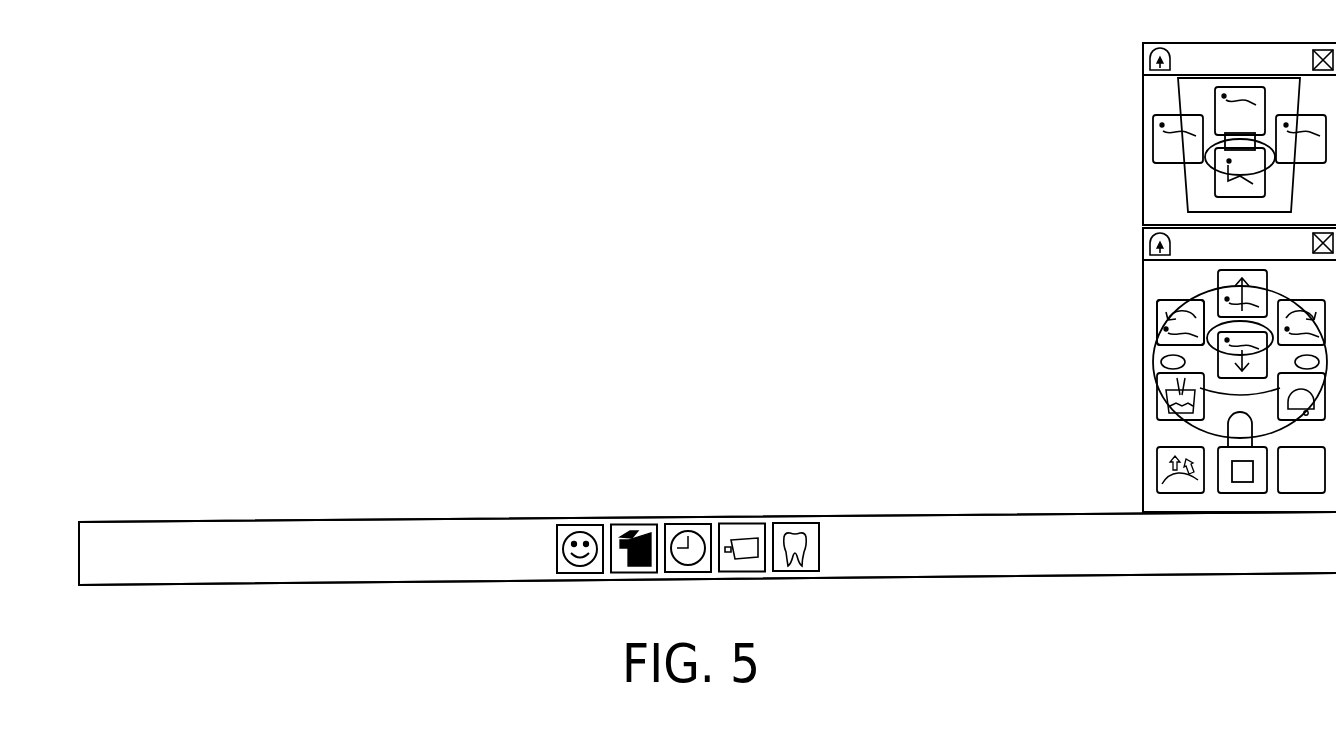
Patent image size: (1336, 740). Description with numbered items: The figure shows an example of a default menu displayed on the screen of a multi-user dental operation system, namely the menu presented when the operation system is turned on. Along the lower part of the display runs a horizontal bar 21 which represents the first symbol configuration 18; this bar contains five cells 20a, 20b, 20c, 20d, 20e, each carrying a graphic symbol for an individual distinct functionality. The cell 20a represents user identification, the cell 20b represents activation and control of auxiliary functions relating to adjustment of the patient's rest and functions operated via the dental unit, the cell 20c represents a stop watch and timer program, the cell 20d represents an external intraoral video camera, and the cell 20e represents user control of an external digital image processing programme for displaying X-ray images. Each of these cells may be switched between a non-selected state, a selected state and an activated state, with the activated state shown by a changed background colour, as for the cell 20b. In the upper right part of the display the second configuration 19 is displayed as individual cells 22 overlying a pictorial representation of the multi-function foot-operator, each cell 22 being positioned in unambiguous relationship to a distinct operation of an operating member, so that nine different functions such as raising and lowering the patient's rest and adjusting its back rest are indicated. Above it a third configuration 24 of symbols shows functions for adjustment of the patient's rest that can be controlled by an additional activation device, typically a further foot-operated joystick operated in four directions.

The first symbol configuration 18 is at (314, 428).
The second configuration 19 is at (1098, 364).
The cell 20a is at (580, 523).
The cell 20b is at (634, 523).
The cell 20c is at (690, 523).
The cell 20d is at (742, 523).
The cell 20e is at (796, 523).
The horizontal bar 21 is at (445, 537).
The cells 22 is at (1145, 287).
The third configuration 24 is at (1098, 111).